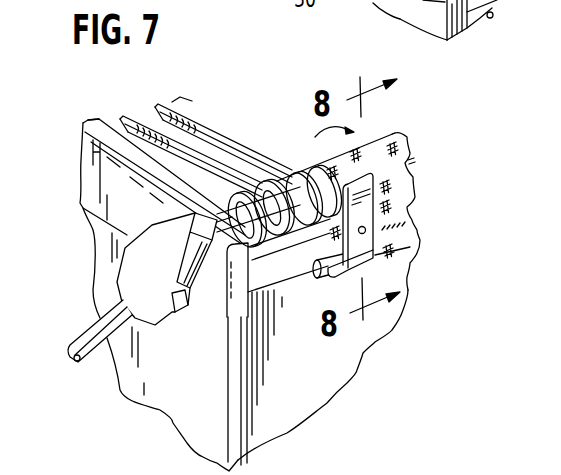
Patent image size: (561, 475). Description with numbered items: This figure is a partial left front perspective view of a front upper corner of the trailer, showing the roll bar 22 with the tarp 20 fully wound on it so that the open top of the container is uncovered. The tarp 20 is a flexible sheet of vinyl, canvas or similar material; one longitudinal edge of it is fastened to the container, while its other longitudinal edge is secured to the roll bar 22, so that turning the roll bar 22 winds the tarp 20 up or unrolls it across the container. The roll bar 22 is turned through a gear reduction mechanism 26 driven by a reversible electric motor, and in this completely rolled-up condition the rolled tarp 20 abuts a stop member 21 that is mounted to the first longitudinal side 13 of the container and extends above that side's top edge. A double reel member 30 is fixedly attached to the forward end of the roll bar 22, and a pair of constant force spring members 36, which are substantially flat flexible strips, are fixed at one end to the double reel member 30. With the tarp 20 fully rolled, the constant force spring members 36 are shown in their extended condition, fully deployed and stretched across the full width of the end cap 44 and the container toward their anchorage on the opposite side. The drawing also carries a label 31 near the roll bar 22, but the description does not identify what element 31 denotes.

The first longitudinal side 13 is at (312, 397).
The tarp 20 is at (405, 152).
The stop member 21 is at (368, 218).
The roll bar 22 is at (373, 2).
The gear reduction mechanism 26 is at (169, 274).
The double reel member 30 is at (258, 178).
The pivot 31 is at (390, 20).
The constant force spring members 36 is at (160, 100).
The end cap 44 is at (120, 133).